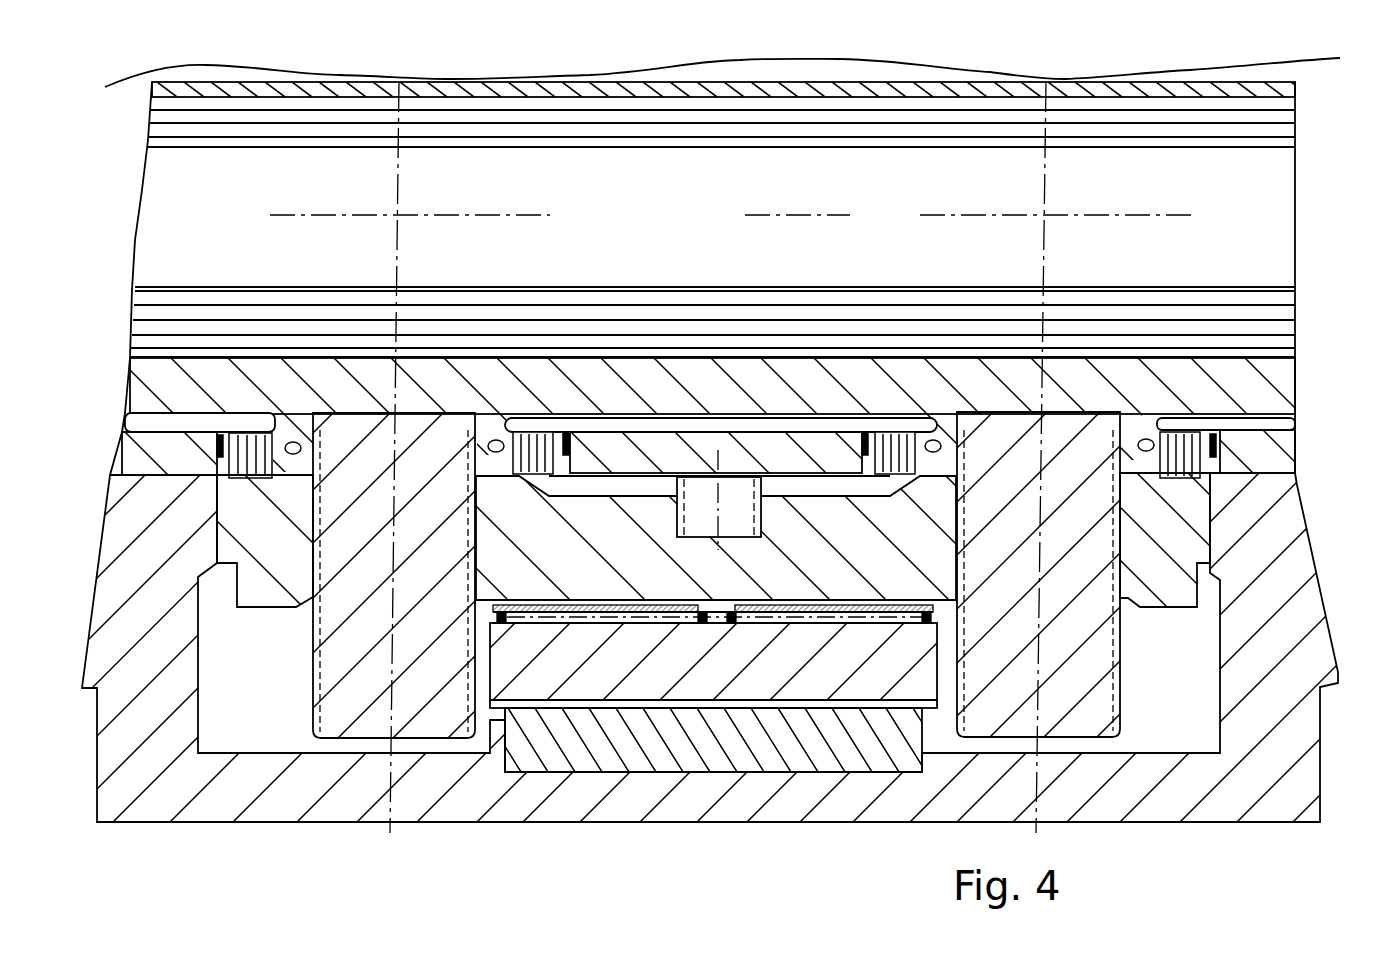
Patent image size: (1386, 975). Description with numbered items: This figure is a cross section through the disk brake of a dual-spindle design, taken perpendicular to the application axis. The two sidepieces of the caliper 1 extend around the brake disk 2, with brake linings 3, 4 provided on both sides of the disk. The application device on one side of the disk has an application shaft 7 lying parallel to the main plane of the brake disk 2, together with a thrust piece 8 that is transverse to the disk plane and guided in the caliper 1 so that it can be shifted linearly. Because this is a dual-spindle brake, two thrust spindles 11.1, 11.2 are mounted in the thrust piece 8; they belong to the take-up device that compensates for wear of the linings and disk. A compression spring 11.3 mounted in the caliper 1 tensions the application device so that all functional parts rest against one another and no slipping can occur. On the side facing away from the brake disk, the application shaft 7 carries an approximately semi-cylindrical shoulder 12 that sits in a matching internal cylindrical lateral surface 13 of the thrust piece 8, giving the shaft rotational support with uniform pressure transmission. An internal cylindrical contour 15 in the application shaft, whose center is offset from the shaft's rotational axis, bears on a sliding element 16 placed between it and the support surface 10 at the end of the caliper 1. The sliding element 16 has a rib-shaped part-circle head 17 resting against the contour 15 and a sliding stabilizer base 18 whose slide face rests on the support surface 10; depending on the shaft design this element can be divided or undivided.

The caliper 1 is at (1318, 458).
The brake disk 2 is at (1315, 193).
The brake lining 3 is at (1322, 297).
The brake lining 4 is at (1321, 97).
The application shaft 7 is at (517, 650).
The thrust piece 8 is at (1175, 542).
The support surface 10 is at (643, 775).
The thrust spindle 11.1 is at (333, 712).
The thrust spindle 11.2 is at (1073, 712).
The compression spring 11.3 is at (733, 487).
The shoulder 12 is at (568, 630).
The internal cylindrical lateral surface 13 is at (527, 603).
The internal cylindrical contour 15 is at (854, 690).
The sliding element 16 is at (562, 747).
The part-circle head 17 is at (790, 710).
The sliding stabilizer base 18 is at (706, 753).